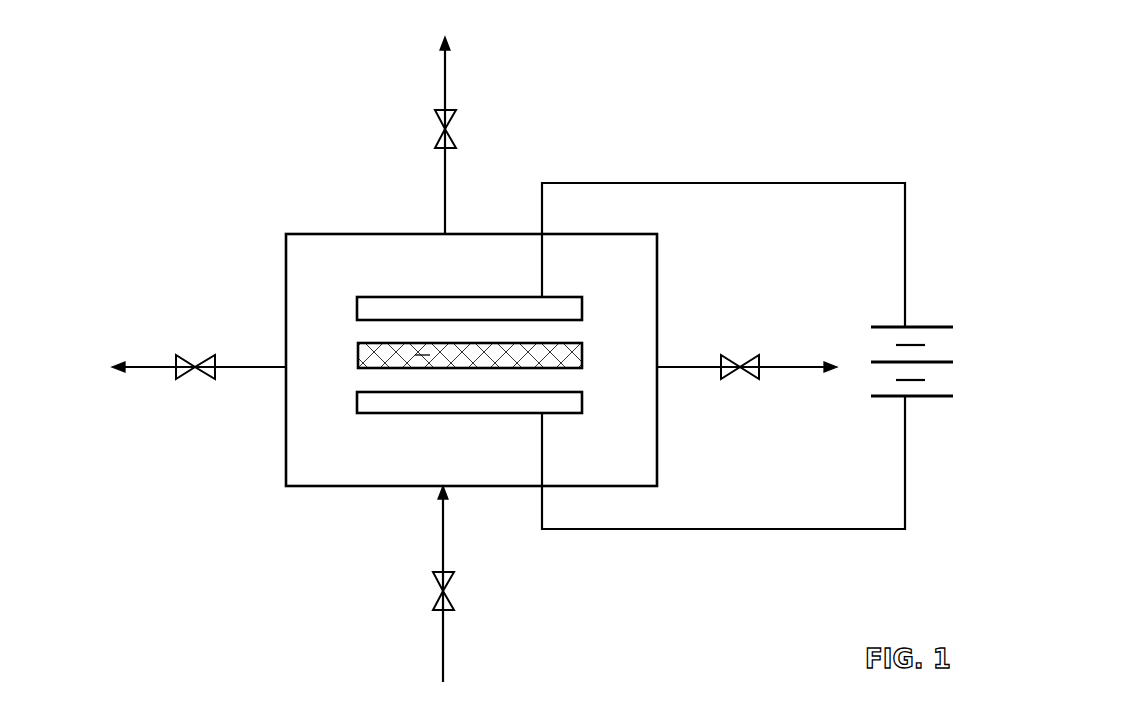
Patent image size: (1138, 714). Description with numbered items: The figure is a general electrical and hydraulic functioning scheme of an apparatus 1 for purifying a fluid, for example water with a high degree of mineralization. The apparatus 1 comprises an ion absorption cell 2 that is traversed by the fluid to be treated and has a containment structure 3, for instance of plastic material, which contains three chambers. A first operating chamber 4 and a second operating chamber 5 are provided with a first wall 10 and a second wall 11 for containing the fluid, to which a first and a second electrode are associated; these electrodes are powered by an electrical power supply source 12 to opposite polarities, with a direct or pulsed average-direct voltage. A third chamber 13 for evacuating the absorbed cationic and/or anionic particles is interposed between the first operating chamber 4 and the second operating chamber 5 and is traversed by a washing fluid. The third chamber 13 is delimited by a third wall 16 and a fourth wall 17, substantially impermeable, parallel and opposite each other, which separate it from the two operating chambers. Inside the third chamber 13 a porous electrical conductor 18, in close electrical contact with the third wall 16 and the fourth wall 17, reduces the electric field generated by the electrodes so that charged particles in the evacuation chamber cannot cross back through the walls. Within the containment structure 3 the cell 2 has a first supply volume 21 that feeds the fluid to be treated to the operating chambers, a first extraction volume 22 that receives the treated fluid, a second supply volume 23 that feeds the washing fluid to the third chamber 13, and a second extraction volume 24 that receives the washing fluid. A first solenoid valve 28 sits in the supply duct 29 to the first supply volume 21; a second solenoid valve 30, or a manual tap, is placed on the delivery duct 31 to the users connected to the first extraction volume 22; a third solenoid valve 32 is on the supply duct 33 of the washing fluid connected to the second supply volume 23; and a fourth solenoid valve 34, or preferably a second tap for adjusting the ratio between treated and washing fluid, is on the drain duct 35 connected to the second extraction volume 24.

The apparatus for purifying a fluid 1 is at (975, 98).
The ion absorption cell 2 is at (240, 523).
The containment structure 3 is at (287, 462).
The first operating chamber 4 is at (443, 330).
The second operating chamber 5 is at (424, 379).
The first wall 10 is at (378, 308).
The second wall 11 is at (383, 408).
The electrical power supply source 12 is at (1015, 323).
The third chamber 13 is at (490, 348).
The third wall 16 is at (572, 342).
The fourth wall 17 is at (550, 367).
The porous electrical conductor 18 is at (422, 353).
The first supply volume 21 is at (480, 502).
The first extraction volume 22 is at (462, 222).
The second supply volume 23 is at (272, 380).
The second extraction volume 24 is at (667, 351).
The first solenoid valve 28 is at (437, 608).
The supply duct 29 is at (445, 543).
The second solenoid valve 30 is at (453, 140).
The delivery duct 31 is at (443, 165).
The third solenoid valve 32 is at (208, 356).
The supply duct of the washing fluid 33 is at (140, 368).
The fourth solenoid valve 34 is at (727, 370).
The drain duct 35 is at (782, 370).